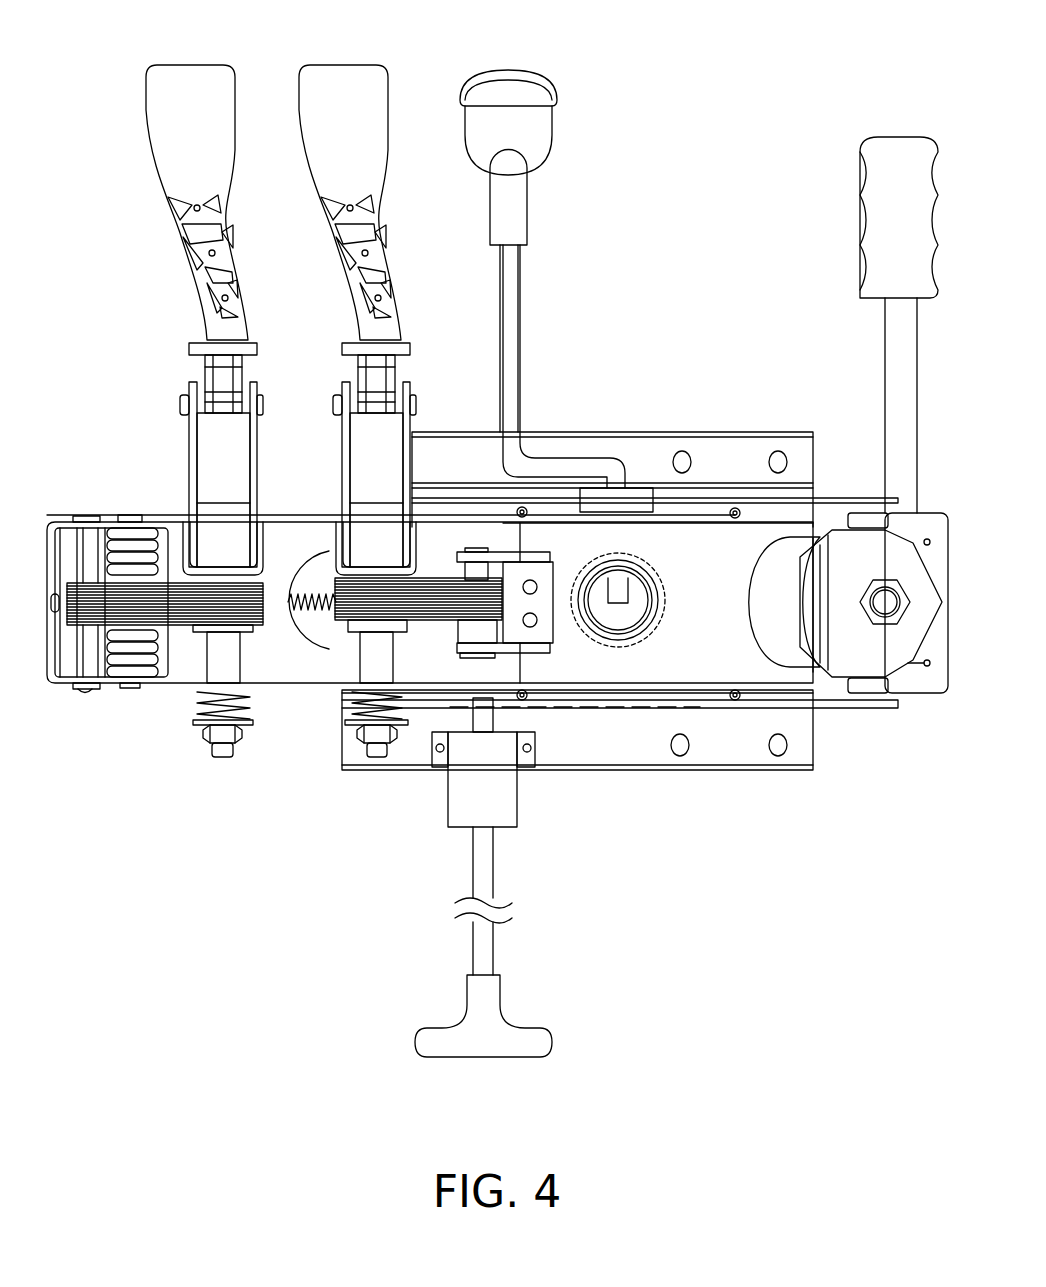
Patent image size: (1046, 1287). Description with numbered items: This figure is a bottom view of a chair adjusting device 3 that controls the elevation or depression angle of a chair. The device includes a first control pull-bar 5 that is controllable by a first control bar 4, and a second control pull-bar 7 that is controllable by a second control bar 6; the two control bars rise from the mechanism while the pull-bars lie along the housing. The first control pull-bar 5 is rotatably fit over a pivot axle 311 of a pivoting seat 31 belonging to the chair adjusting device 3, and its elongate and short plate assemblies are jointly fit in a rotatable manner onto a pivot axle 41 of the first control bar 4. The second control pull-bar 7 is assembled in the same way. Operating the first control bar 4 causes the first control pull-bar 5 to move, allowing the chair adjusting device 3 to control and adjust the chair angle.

The chair adjusting device 3 is at (828, 828).
The first control bar 4 is at (365, 173).
The first control pull-bar 5 is at (438, 613).
The second control bar 6 is at (157, 120).
The second control pull-bar 7 is at (173, 615).
The pivoting seat 31 is at (520, 650).
The pivot axle 41 is at (372, 663).
The pivot axle 311 is at (478, 572).